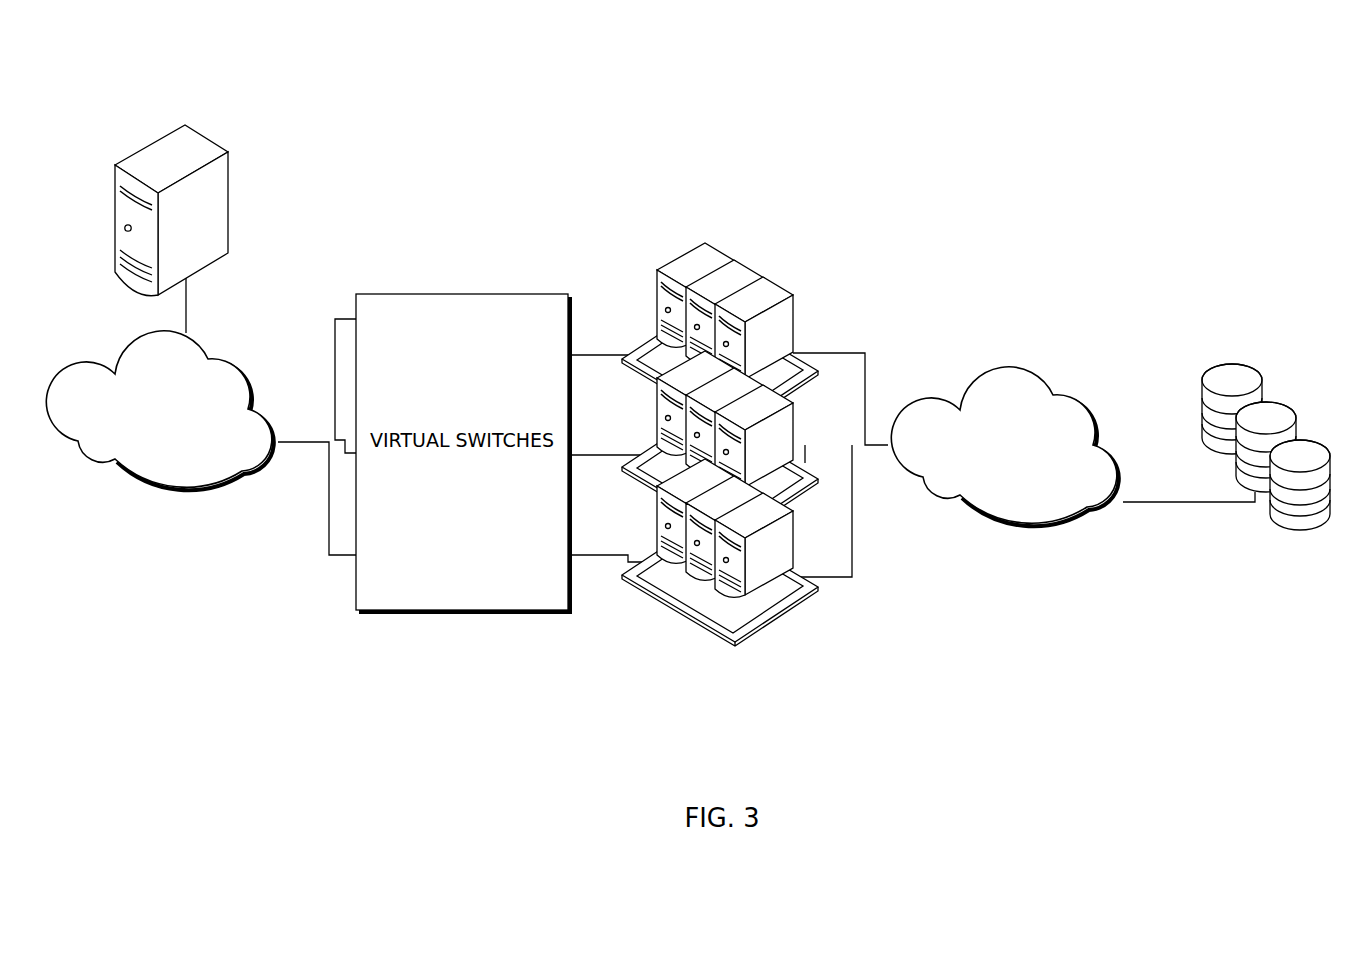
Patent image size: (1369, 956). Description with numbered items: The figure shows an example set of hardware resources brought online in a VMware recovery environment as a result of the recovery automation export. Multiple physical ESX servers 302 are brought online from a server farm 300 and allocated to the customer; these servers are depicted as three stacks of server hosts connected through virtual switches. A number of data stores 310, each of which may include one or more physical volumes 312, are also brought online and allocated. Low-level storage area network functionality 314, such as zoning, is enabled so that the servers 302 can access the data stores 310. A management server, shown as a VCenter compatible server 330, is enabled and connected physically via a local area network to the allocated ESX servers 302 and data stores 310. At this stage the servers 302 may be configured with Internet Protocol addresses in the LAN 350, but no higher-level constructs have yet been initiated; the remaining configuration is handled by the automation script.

The server farm 300 is at (695, 228).
The ESX server 302 is at (782, 285).
The data store 310 is at (1277, 340).
The physical volume 312 is at (1296, 420).
The storage area network functionality 314 is at (1043, 378).
The VCenter compatible server 330 is at (228, 199).
The LAN 350 is at (210, 353).